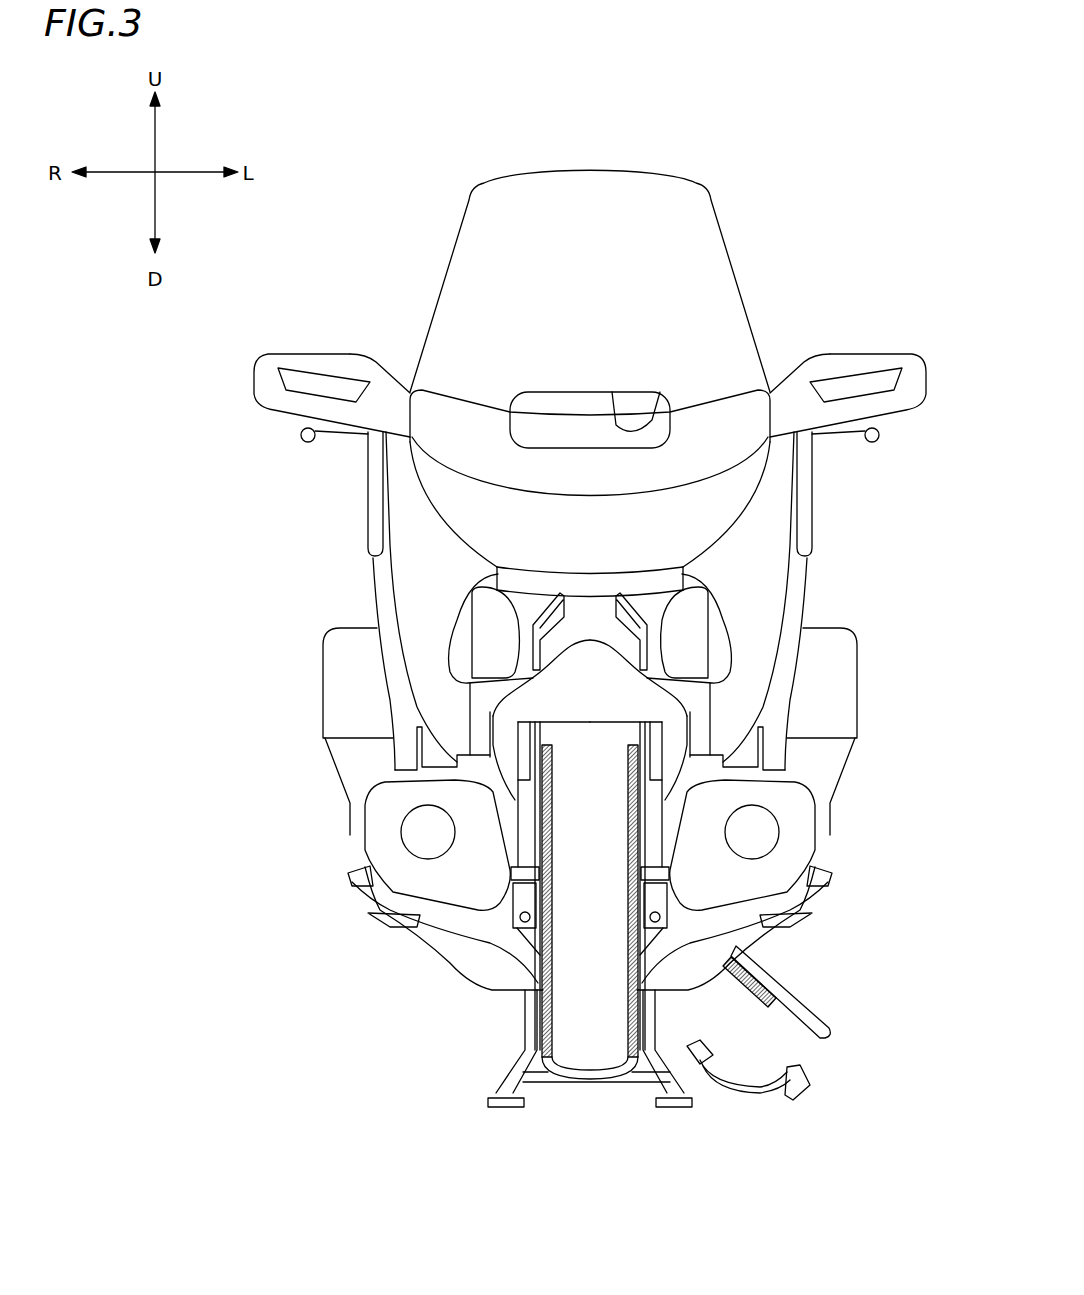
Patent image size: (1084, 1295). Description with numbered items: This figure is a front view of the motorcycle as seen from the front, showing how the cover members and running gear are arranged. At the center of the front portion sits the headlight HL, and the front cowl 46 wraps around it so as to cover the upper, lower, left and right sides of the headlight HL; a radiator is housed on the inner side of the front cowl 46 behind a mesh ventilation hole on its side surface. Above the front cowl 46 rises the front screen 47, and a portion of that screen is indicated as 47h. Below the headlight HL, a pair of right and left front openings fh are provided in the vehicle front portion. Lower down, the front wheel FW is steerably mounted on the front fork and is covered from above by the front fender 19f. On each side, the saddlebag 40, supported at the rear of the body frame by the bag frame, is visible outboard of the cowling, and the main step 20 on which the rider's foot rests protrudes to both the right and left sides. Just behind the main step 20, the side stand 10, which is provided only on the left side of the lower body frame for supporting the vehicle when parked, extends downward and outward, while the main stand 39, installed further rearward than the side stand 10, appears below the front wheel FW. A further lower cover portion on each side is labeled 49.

The front screen 47 is at (592, 226).
The windshield opening 47h is at (652, 421).
The headlight HL is at (682, 523).
The front cowl 46 is at (787, 503).
The front openings fh is at (482, 620).
The saddlebag 40 is at (350, 659).
The front fender 19f is at (597, 693).
The main step 20 is at (348, 880).
The lower cowl 49 is at (480, 956).
The side stand 10 is at (780, 980).
The front wheel FW is at (583, 1000).
The main stand 39 is at (723, 1100).